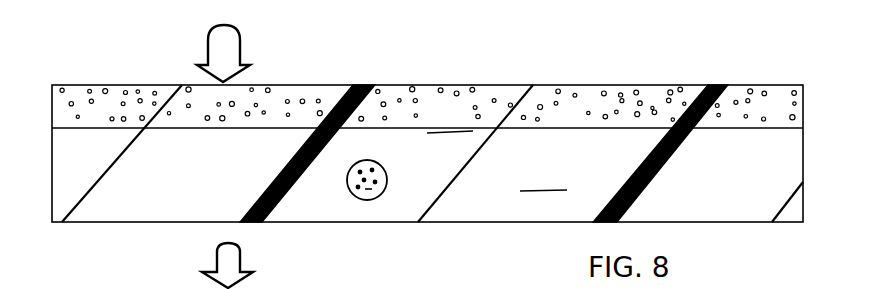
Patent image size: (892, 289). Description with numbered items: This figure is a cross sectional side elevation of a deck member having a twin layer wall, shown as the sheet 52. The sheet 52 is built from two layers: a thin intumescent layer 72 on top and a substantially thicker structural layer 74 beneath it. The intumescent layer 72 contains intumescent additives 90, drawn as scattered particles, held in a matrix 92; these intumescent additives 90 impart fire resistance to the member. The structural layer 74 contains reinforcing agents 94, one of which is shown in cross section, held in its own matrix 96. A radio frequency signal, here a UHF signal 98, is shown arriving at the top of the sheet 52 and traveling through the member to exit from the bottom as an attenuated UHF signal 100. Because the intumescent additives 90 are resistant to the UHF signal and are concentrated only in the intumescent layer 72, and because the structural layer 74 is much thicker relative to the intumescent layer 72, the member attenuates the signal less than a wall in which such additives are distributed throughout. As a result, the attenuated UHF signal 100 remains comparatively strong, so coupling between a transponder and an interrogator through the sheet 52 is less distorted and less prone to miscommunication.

The sheet 52 is at (646, 82).
The intumescent layer 72 is at (512, 95).
The structural layer 74 is at (483, 207).
The intumescent additives 90 is at (412, 104).
The matrix 92 is at (450, 118).
The reinforcing agents 94 is at (373, 200).
The matrix 96 is at (543, 176).
The UHF signal 98 is at (240, 33).
The attenuated UHF signal 100 is at (240, 247).